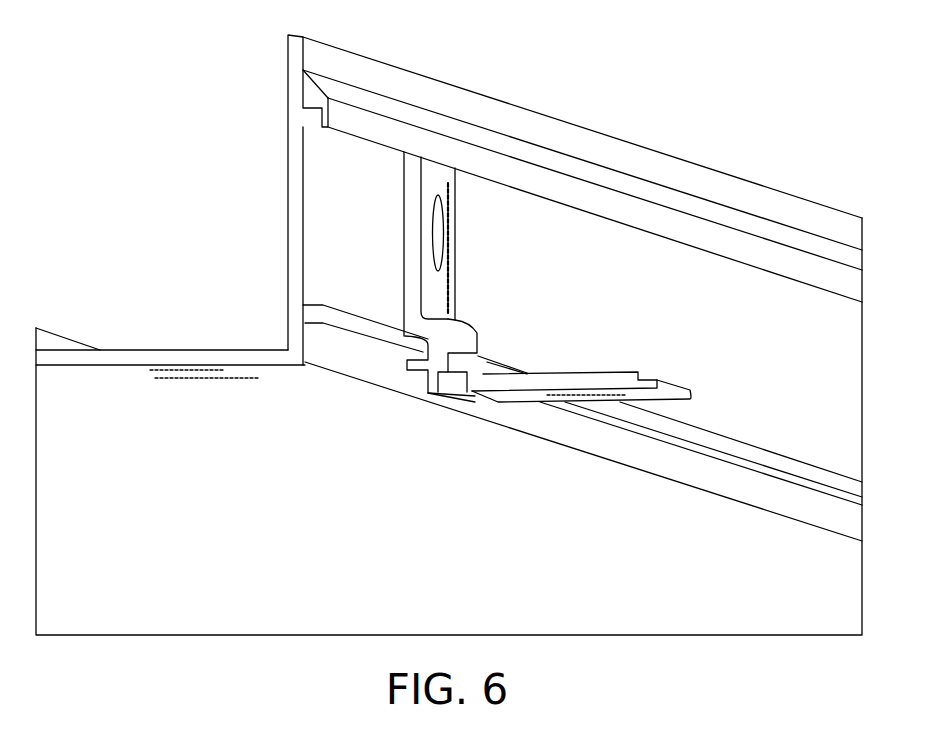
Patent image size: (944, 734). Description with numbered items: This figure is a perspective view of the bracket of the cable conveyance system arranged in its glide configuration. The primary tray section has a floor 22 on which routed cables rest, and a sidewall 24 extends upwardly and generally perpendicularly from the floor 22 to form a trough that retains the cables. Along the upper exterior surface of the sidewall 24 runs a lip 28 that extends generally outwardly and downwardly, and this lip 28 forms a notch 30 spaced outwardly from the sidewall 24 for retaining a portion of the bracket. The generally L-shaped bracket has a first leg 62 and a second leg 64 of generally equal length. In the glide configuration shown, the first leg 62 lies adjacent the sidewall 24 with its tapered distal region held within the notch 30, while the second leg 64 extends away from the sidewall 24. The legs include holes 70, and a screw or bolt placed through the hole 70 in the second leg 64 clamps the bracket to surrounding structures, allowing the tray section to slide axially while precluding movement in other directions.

The floor 22 is at (131, 360).
The sidewall 24 is at (548, 135).
The lip 28 is at (592, 197).
The notch 30 is at (312, 117).
The first leg 62 is at (438, 287).
The second leg 64 is at (613, 382).
The hole 70 is at (438, 230).